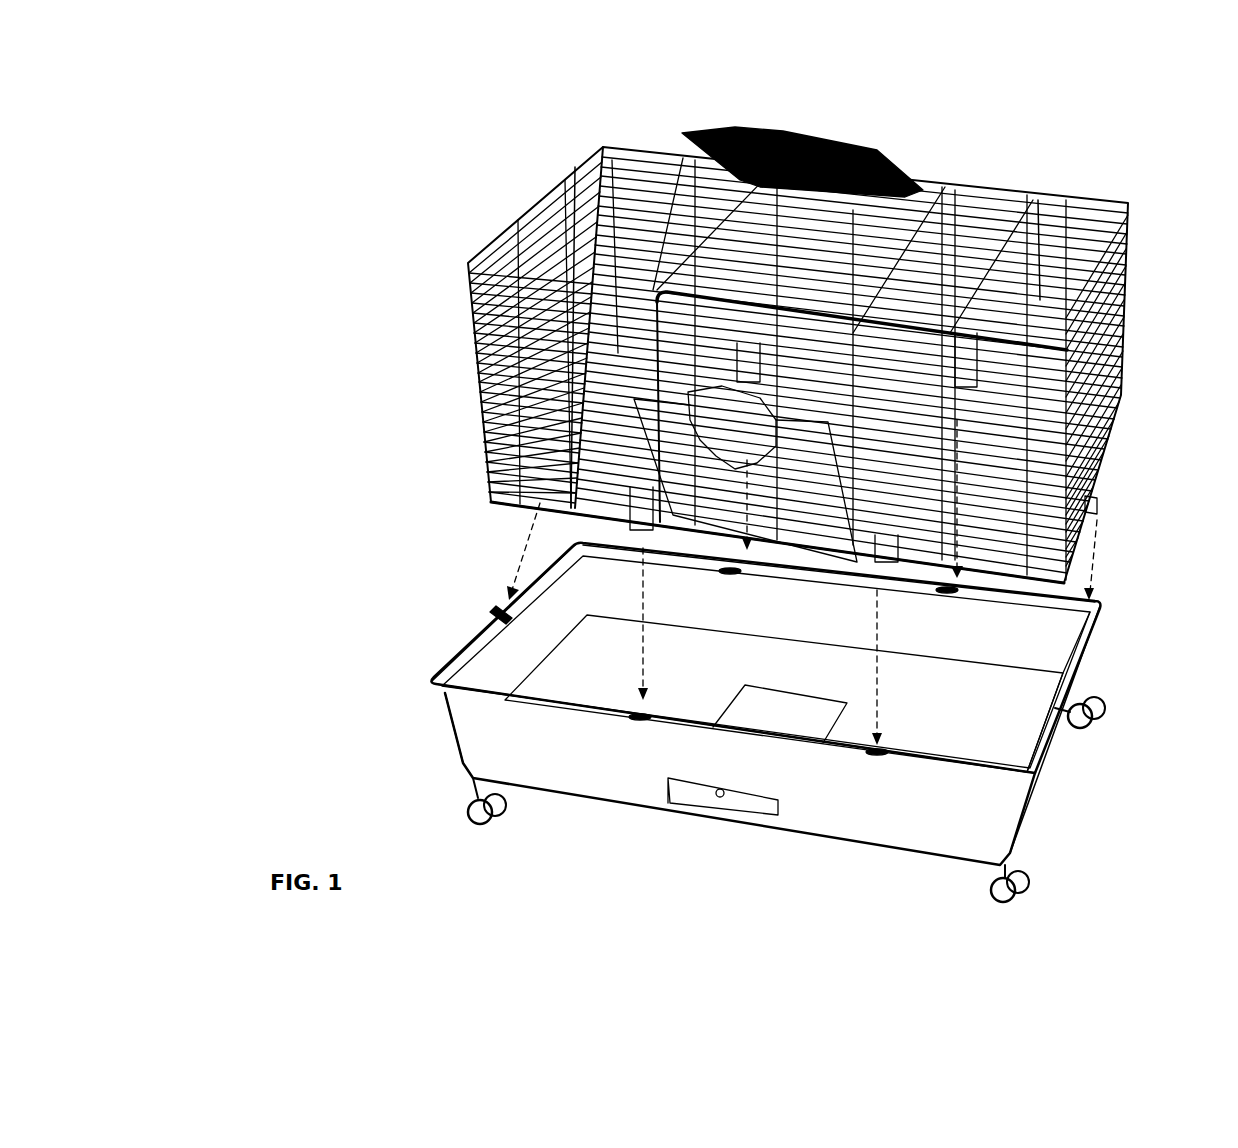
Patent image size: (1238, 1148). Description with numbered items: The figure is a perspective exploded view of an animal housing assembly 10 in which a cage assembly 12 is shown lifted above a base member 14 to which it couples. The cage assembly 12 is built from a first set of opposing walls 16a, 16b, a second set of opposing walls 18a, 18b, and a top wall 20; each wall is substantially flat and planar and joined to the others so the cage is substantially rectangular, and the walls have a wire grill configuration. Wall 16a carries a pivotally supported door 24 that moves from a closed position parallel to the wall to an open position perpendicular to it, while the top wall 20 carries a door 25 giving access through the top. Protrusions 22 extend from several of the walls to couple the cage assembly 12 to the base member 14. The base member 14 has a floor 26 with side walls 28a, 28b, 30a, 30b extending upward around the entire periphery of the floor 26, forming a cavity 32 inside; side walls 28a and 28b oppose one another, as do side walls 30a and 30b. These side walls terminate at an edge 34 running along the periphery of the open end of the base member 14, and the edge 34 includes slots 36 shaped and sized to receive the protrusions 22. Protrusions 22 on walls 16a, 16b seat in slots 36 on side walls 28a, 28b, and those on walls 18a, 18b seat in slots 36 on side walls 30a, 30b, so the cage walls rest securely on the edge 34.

The animal housing assembly 10 is at (322, 182).
The cage assembly 12 is at (1150, 231).
The base member 14 is at (350, 712).
The first wall of first set of opposing walls 16a is at (575, 467).
The second wall of first set of opposing walls 16b is at (1043, 247).
The first wall of second set of opposing walls 18a is at (485, 300).
The second wall of second set of opposing walls 18b is at (1108, 356).
The top wall 20 is at (624, 202).
The protrusions 22 is at (1092, 508).
The door 24 is at (690, 445).
The door 25 is at (836, 143).
The floor 26 is at (997, 733).
The side wall 28a is at (527, 738).
The side wall 28b is at (1008, 598).
The side wall 30a is at (453, 656).
The side wall 30b is at (983, 773).
The cavity 32 is at (781, 668).
The edge 34 is at (1037, 763).
The slots 36 is at (503, 610).